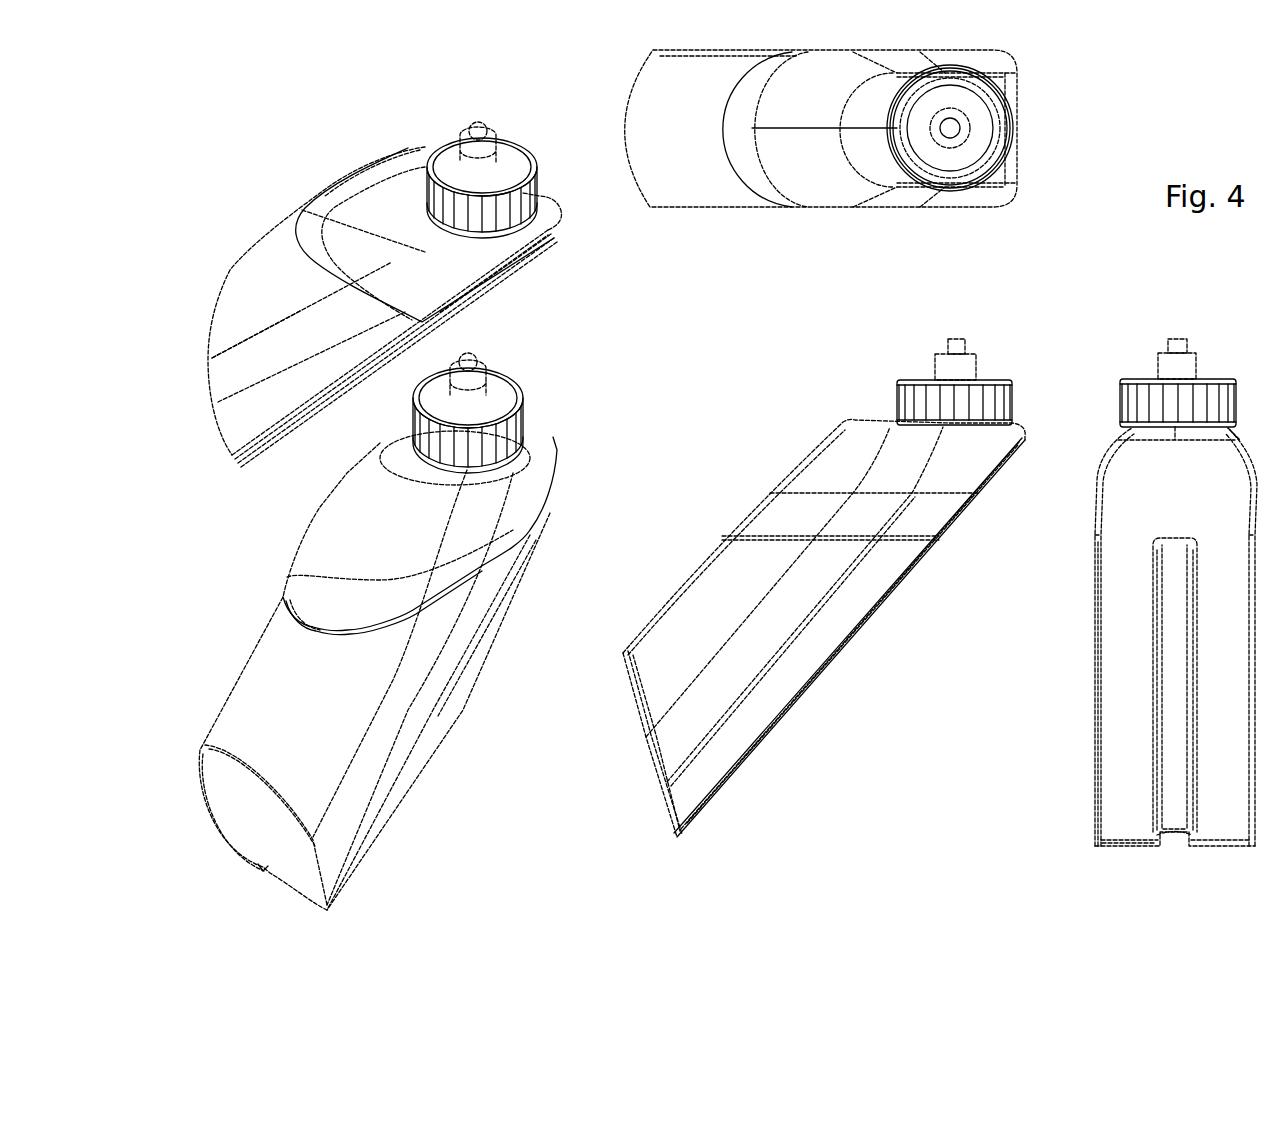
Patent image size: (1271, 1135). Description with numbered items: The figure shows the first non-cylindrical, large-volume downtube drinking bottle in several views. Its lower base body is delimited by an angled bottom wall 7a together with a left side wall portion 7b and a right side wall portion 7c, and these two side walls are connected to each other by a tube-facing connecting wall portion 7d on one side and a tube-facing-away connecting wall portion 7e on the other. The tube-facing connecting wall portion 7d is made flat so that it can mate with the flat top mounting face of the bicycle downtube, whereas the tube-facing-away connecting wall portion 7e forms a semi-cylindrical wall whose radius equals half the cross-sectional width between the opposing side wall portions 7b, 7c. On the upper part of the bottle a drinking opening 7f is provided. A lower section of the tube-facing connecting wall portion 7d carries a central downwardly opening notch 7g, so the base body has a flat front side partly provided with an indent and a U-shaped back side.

The angled bottom wall 7a is at (248, 803).
The left side wall portion 7b is at (1255, 632).
The right side wall portion 7c is at (285, 353).
The tube-facing connecting wall portion 7d is at (522, 257).
The tube-facing-away connecting wall portion 7e is at (280, 258).
The drinking opening 7f is at (482, 140).
The central downwardly opening notch 7g is at (453, 292).